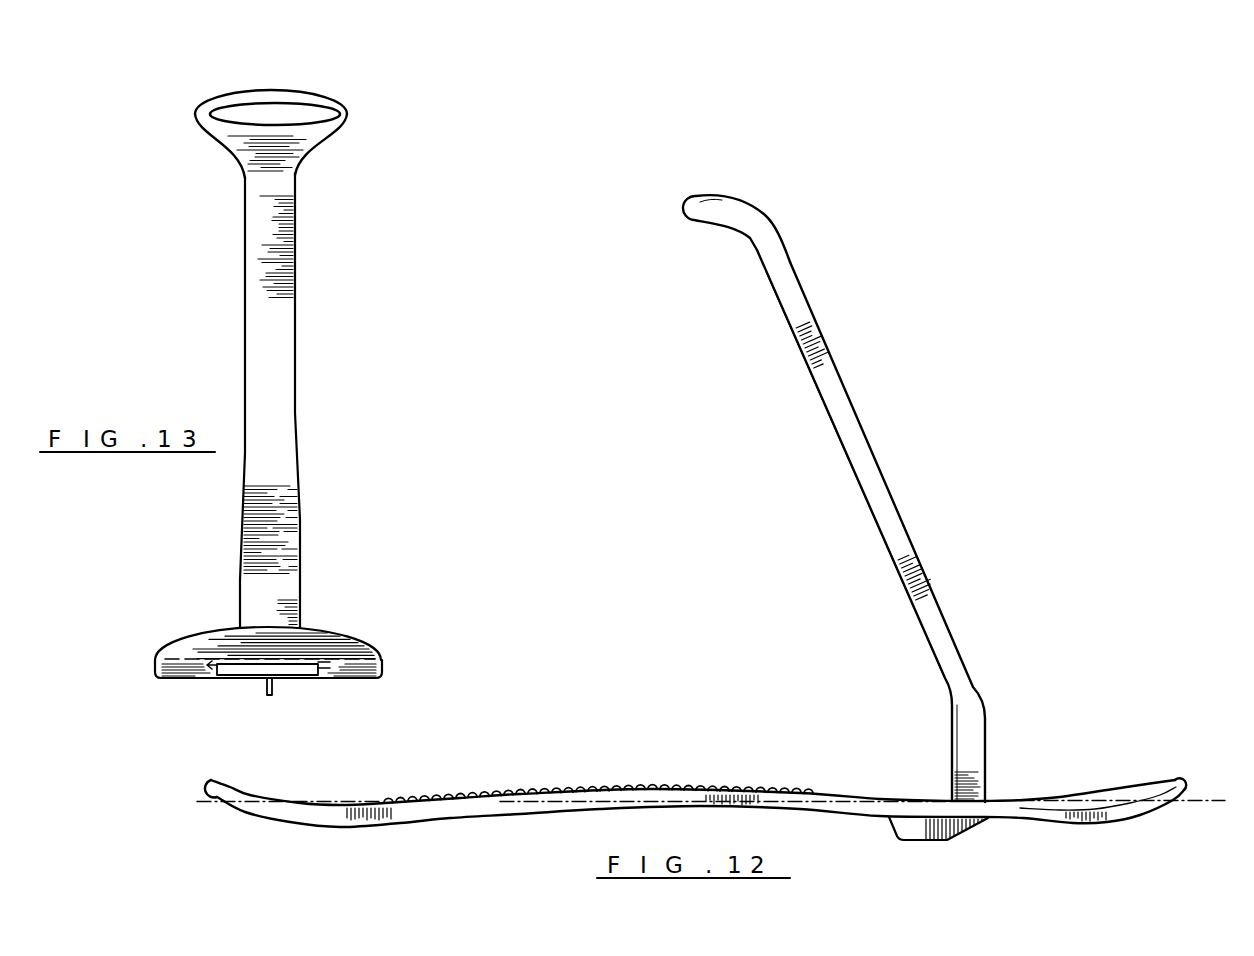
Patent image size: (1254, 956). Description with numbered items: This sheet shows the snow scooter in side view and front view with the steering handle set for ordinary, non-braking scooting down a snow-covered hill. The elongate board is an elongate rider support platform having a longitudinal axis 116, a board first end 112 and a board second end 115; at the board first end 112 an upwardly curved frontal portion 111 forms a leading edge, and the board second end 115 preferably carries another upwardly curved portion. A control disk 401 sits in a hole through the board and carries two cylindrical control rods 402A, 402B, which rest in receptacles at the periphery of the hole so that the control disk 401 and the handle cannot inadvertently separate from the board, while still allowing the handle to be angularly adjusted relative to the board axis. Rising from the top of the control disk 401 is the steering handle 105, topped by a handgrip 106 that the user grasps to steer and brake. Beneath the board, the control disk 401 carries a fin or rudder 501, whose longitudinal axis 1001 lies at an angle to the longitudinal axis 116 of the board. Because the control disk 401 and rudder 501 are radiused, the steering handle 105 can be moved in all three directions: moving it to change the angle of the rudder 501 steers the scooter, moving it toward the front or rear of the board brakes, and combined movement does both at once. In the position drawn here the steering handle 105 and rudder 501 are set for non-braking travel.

In FIG. 13, the steering handle 105 is at (297, 380).
In FIG. 12, the steering handle 105 is at (868, 437).
In FIG. 13, the handgrip 106 is at (345, 110).
In FIG. 12, the handgrip 106 is at (738, 204).
In FIG. 13, the upwardly curved frontal portion 111 is at (220, 628).
In FIG. 12, the upwardly curved frontal portion 111 is at (1172, 787).
In FIG. 12, the board first end 112 is at (1148, 812).
In FIG. 12, the board second end 115 is at (232, 806).
In FIG. 12, the longitudinal axis 116 is at (1196, 800).
In FIG. 13, the control disk 401 is at (305, 664).
In FIG. 13, the control rod 402A is at (382, 665).
In FIG. 13, the control rod 402B is at (207, 665).
In FIG. 13, the rudder 501 is at (268, 695).
In FIG. 12, the rudder 501 is at (935, 841).
In FIG. 12, the longitudinal axis of the rudder 1001 is at (1012, 810).